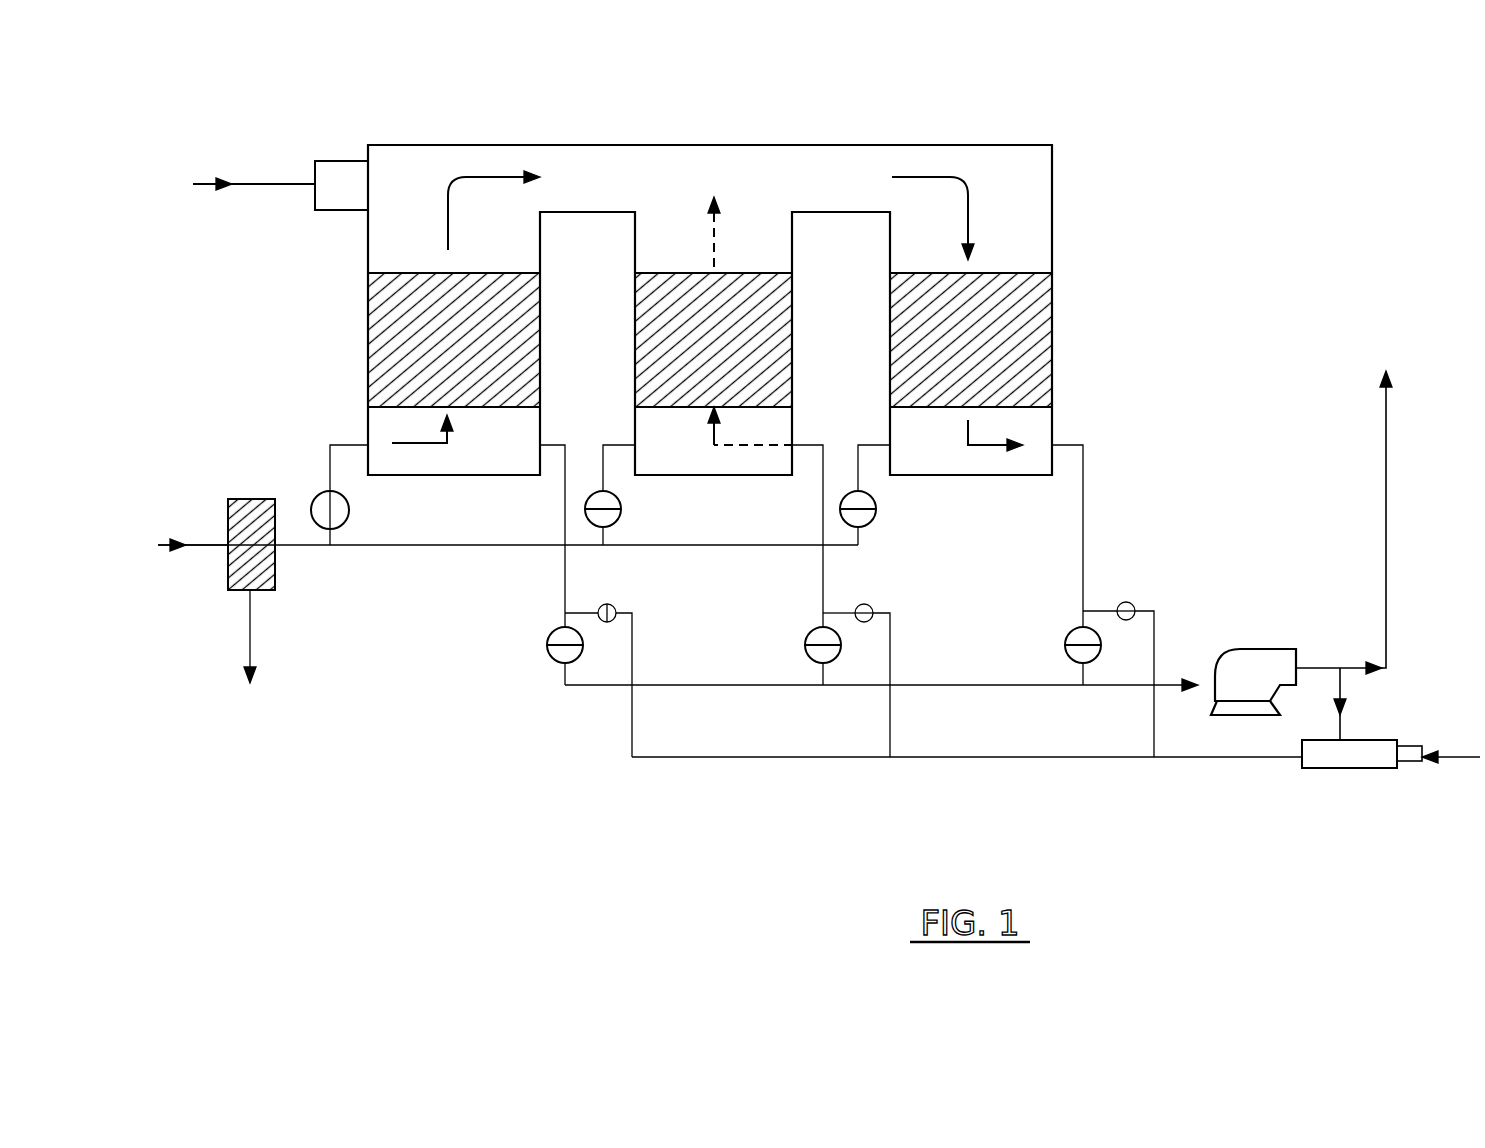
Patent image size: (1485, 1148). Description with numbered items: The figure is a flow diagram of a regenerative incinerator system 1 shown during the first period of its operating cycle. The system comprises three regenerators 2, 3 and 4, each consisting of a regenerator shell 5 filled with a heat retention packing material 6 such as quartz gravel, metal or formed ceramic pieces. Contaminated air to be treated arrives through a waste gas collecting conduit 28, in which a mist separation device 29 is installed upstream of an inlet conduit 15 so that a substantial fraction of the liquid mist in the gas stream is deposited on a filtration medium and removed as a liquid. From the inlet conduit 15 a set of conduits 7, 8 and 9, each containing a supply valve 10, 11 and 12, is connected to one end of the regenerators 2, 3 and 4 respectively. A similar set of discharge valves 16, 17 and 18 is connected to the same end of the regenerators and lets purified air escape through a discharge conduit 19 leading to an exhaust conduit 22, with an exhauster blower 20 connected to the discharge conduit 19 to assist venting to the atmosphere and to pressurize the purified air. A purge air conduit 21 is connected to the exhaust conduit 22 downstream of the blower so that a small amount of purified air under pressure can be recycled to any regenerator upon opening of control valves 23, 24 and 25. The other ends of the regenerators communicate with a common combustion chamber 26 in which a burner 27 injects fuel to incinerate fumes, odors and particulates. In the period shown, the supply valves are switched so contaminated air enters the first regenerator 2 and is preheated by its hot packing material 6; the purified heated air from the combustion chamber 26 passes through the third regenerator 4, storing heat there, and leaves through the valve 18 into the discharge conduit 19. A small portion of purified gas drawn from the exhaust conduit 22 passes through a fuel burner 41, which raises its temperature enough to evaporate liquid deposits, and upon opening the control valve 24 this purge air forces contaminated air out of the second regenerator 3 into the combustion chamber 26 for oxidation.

The regenerative incinerator system 1 is at (1055, 200).
The first regenerator 2 is at (397, 293).
The second regenerator 3 is at (665, 293).
The third regenerator 4 is at (905, 293).
The regenerator shell 5 is at (1052, 294).
The heat retention packing material 6 is at (1000, 372).
The conduit 7 is at (330, 455).
The conduit 8 is at (600, 430).
The conduit 9 is at (858, 447).
The supply valve 10 is at (350, 512).
The supply valve 11 is at (622, 516).
The supply valve 12 is at (877, 516).
The inlet conduit 15 is at (384, 550).
The discharge valve 16 is at (547, 645).
The discharge valve 17 is at (805, 645).
The discharge valve 18 is at (1065, 645).
The discharge conduit 19 is at (1165, 681).
The exhauster blower 20 is at (1258, 648).
The purge air conduit 21 is at (1240, 762).
The exhaust conduit 22 is at (1388, 622).
The control valve 23 is at (614, 602).
The control valve 24 is at (872, 602).
The control valve 25 is at (1131, 601).
The combustion chamber 26 is at (603, 176).
The burner 27 is at (345, 178).
The waste gas collecting conduit 28 is at (200, 540).
The mist separation device 29 is at (276, 575).
The fuel burner 41 is at (1370, 770).